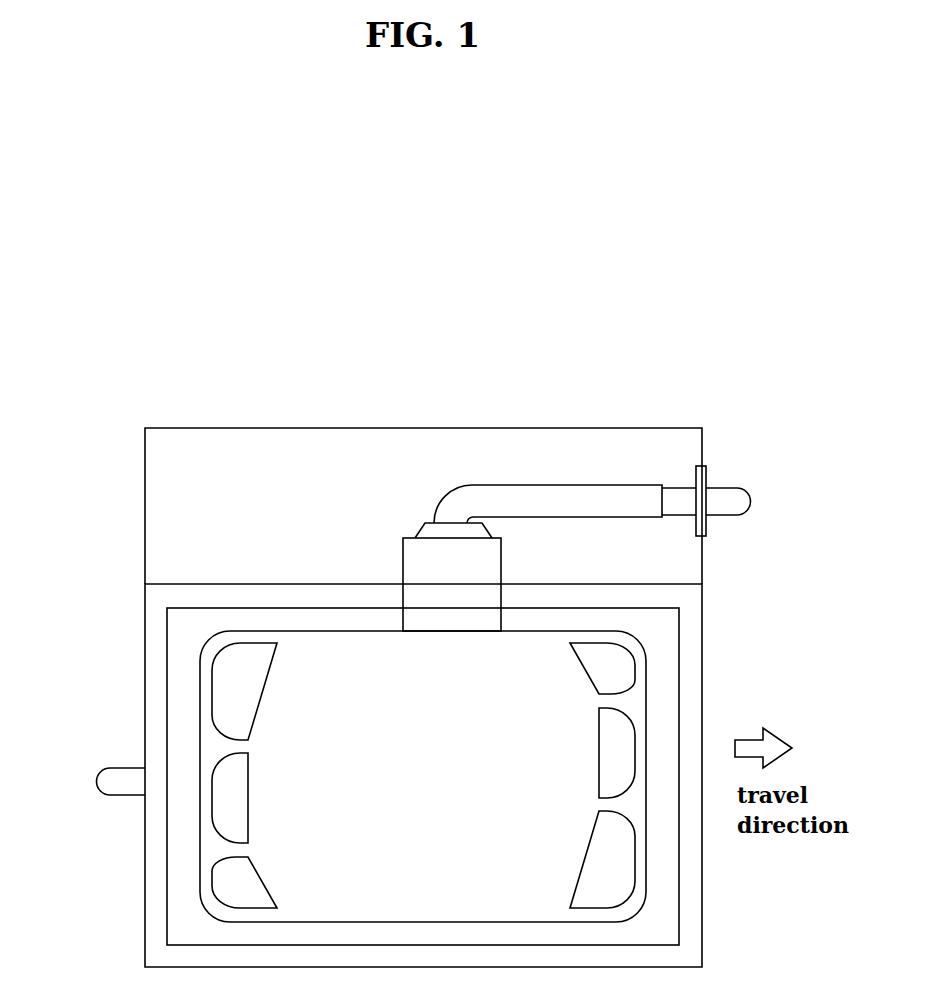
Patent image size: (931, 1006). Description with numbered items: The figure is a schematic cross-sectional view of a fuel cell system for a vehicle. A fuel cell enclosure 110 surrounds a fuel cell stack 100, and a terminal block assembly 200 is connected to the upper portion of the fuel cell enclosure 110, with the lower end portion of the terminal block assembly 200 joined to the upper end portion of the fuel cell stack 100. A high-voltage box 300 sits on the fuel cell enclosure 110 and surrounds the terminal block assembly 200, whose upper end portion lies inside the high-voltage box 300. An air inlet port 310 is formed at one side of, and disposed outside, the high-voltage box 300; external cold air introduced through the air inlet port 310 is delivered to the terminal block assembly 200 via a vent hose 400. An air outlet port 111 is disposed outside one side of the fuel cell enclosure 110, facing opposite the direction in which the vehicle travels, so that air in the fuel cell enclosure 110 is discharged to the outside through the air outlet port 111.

The fuel cell stack 100 is at (523, 721).
The fuel cell enclosure 110 is at (145, 667).
The air outlet port 111 is at (97, 785).
The terminal block assembly 200 is at (443, 497).
The high-voltage box 300 is at (145, 507).
The air inlet port 310 is at (722, 488).
The vent hose 400 is at (578, 485).